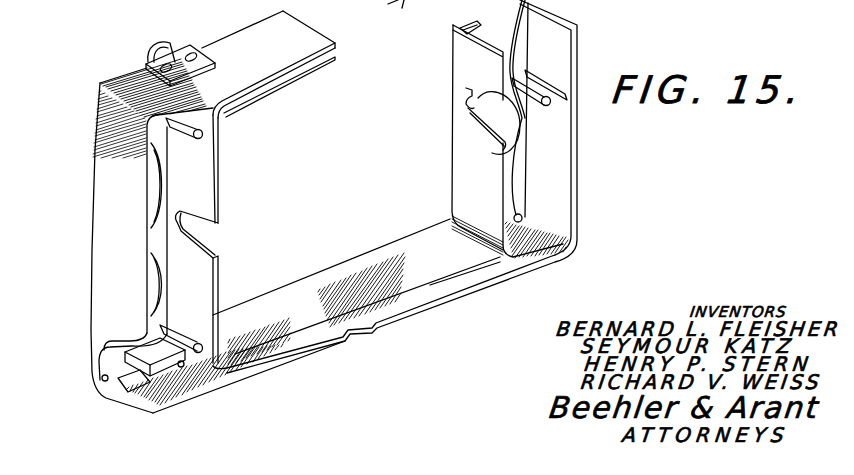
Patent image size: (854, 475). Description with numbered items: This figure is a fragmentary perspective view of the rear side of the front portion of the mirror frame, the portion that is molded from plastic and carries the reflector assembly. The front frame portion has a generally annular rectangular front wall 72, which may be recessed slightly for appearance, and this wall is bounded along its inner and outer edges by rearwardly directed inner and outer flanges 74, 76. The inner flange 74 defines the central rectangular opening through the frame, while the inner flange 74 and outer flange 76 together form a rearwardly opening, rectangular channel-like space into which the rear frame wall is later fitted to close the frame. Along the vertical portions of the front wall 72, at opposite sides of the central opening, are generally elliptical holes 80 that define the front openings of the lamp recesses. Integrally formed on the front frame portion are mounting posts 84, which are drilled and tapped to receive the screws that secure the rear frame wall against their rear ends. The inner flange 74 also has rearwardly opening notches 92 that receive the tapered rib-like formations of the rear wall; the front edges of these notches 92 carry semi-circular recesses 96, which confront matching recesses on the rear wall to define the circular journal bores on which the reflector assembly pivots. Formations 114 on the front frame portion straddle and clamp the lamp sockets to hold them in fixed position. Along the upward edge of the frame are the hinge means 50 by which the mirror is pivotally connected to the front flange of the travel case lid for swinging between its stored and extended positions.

The hinge means 50 is at (157, 44).
The front wall 72 is at (309, 64).
The inner flange 74 is at (415, 242).
The outer flange 76 is at (103, 286).
The elliptical holes 80 is at (508, 133).
The mounting posts 84 is at (202, 134).
The notches 92 is at (207, 250).
The semi-circular recesses 96 is at (466, 103).
The formations 114 is at (125, 356).